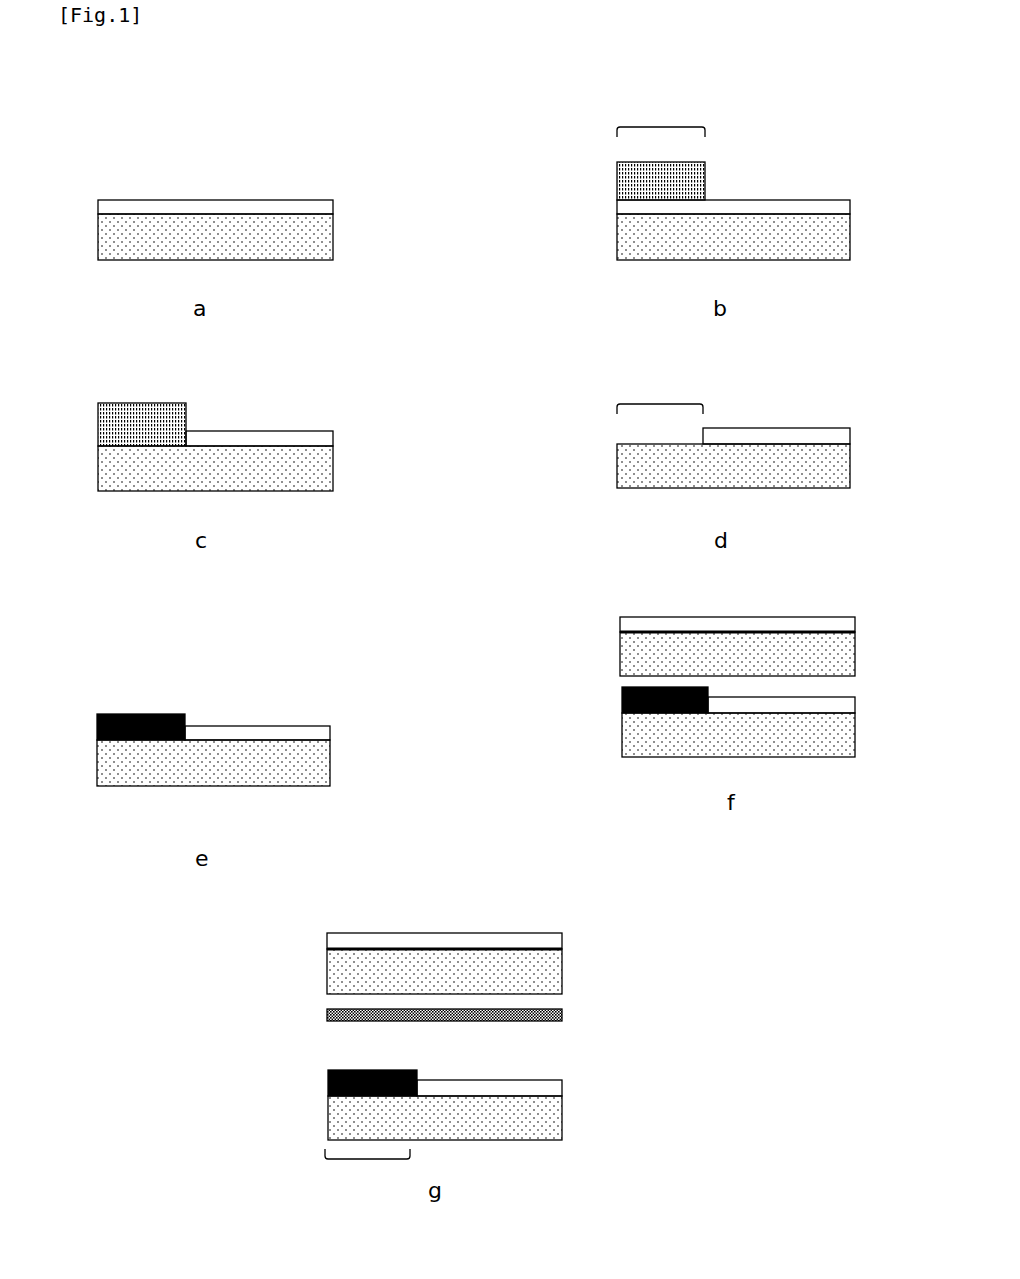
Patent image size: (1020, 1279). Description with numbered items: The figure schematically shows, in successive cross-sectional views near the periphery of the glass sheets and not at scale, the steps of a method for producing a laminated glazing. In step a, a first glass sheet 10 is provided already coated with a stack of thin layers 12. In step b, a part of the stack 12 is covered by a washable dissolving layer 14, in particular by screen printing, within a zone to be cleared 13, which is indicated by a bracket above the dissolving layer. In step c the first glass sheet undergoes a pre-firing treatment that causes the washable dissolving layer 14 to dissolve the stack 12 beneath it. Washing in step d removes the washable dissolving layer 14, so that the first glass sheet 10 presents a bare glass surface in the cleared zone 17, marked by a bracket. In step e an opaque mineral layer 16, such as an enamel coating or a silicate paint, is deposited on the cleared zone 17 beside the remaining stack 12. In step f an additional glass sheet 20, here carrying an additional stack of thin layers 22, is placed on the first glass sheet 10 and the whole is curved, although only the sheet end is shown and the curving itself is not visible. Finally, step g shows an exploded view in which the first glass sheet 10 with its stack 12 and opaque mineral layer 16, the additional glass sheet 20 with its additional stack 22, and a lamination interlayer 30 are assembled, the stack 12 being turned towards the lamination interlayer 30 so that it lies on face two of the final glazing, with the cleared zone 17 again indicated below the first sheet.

The first glass sheet 10 is at (98, 250).
The stack of thin layers 12 is at (98, 207).
The zone to be cleared 13 is at (661, 127).
The washable dissolving layer 14 is at (617, 167).
The opaque mineral layer 16 is at (97, 721).
The cleared zone 17 is at (660, 404).
The additional glass sheet 20 is at (620, 658).
The additional stack of thin layers 22 is at (620, 626).
The lamination interlayer 30 is at (562, 1016).